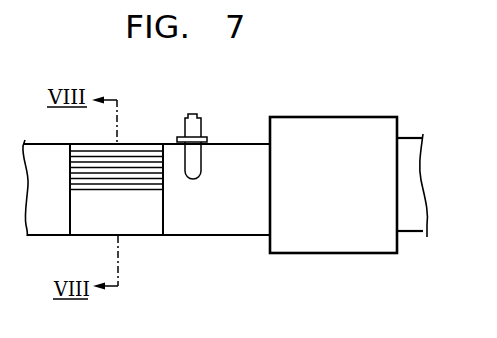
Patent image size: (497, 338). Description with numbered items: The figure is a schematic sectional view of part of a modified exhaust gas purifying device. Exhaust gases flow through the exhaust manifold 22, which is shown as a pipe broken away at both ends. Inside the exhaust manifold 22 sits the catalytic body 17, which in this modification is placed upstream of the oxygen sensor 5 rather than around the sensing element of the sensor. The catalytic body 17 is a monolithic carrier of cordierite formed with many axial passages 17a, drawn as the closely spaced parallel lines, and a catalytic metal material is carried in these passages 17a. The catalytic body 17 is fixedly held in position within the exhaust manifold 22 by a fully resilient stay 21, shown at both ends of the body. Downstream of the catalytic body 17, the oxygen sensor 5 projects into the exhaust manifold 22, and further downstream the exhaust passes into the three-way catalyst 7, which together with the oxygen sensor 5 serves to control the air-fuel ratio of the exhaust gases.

The oxygen sensor 5 is at (203, 128).
The three-way catalyst 7 is at (334, 117).
The catalytic body 17 is at (78, 151).
The axial passages 17a is at (63, 178).
The fully resilient stay 21 is at (163, 152).
The exhaust manifold 22 is at (243, 229).